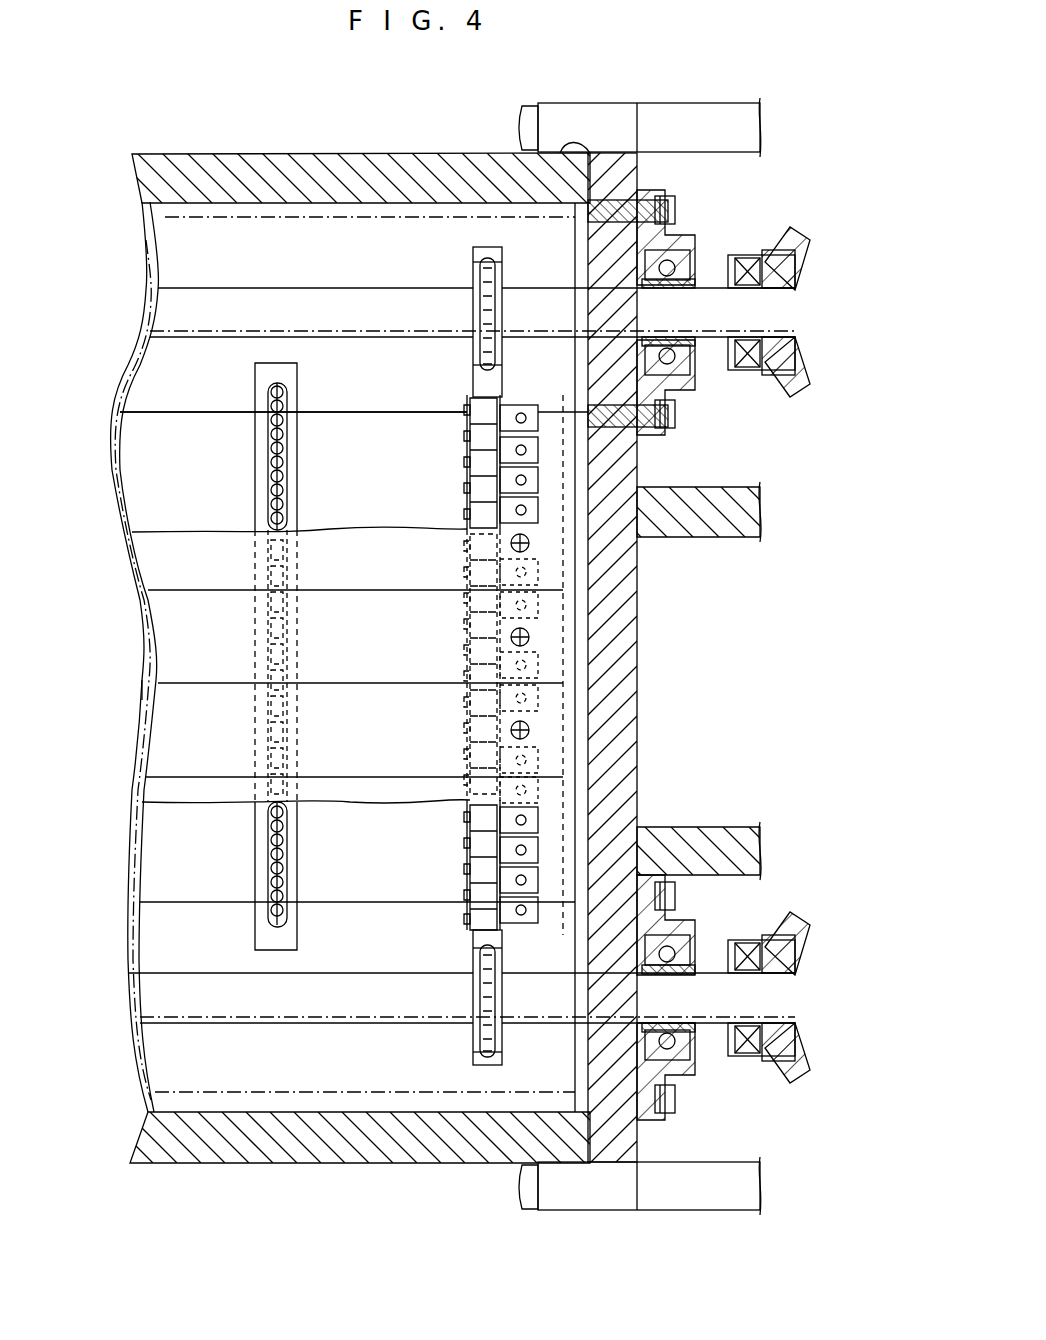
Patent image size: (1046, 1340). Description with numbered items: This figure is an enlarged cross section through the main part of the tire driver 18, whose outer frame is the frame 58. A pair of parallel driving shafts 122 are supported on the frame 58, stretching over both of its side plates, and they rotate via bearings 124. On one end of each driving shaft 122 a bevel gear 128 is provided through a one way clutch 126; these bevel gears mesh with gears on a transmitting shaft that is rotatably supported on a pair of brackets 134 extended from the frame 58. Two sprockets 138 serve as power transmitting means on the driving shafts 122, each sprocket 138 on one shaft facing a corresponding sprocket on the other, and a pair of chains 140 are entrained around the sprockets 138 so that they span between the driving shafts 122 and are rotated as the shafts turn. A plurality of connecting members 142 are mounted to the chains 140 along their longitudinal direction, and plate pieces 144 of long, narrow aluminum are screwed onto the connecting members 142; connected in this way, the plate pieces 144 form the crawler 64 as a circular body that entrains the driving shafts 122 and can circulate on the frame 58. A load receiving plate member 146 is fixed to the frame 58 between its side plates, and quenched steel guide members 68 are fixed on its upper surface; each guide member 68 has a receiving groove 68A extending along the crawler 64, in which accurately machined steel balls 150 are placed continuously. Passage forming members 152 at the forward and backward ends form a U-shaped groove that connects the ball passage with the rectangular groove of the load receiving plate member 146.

The tire driver 18 is at (670, 95).
The frame 58 is at (318, 153).
The crawler 64 is at (148, 731).
The guide member 68 is at (295, 886).
The receiving groove 68A is at (275, 453).
The driving shaft 122 is at (300, 290).
The bearing 124 is at (680, 233).
The one way clutch 126 is at (724, 362).
The bevel gear 128 is at (792, 398).
The bracket 134 is at (708, 537).
The sprocket 138 is at (494, 270).
The chain 140 is at (467, 886).
The connecting member 142 is at (527, 510).
The plate piece 144 is at (380, 574).
The load receiving plate member 146 is at (341, 412).
The ball 150 is at (283, 446).
The passage forming member 152 is at (285, 380).